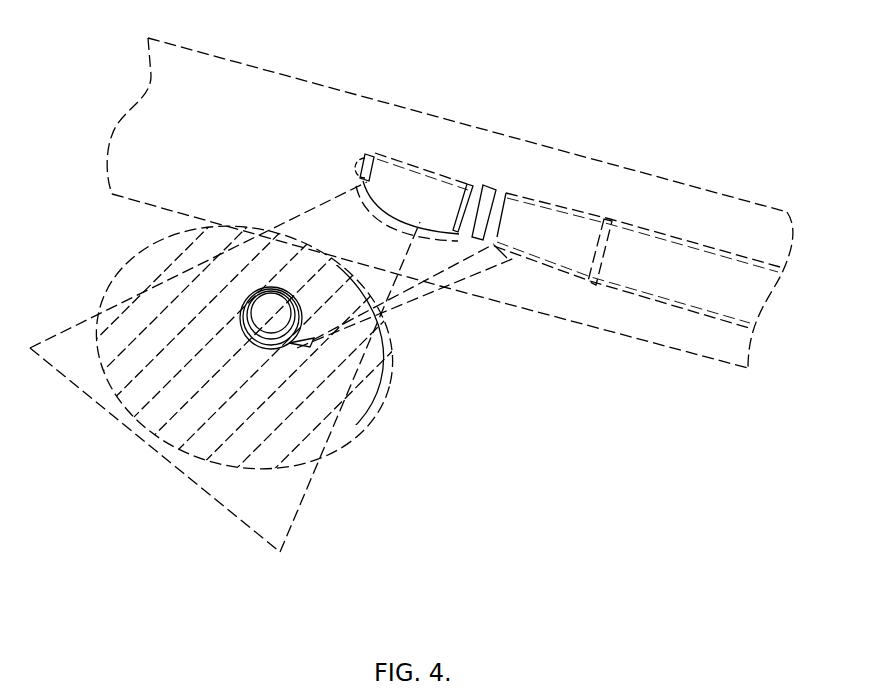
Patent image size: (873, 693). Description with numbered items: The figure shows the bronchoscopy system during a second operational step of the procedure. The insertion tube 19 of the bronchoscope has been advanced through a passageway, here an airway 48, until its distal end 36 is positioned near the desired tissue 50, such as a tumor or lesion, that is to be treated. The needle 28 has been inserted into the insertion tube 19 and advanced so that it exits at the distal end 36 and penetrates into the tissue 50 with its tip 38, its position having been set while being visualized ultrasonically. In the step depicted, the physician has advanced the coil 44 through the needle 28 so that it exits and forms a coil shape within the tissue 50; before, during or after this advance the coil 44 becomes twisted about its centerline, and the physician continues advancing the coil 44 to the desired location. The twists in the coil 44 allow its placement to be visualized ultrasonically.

The airway 48 is at (236, 76).
The distal end 36 is at (540, 70).
The insertion tube 19 is at (687, 243).
The coil 44 is at (241, 312).
The needle 28 is at (426, 297).
The tip 38 is at (288, 345).
The tissue 50 is at (359, 418).